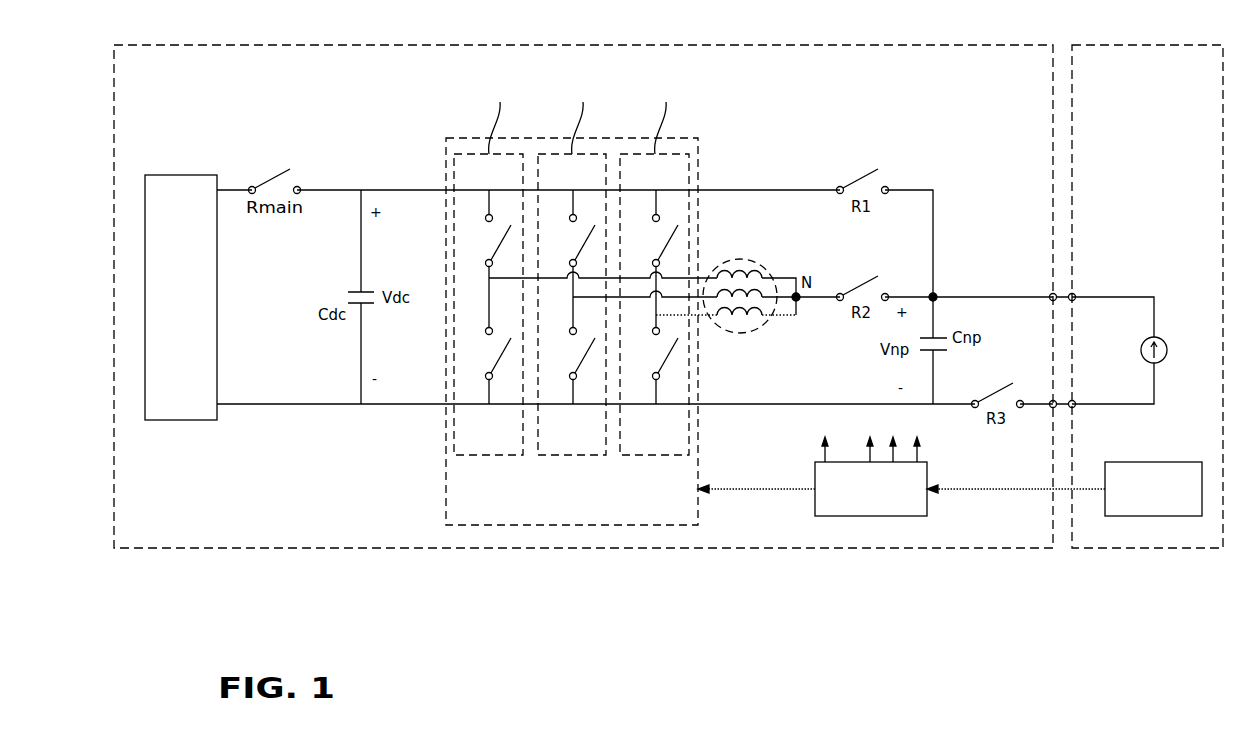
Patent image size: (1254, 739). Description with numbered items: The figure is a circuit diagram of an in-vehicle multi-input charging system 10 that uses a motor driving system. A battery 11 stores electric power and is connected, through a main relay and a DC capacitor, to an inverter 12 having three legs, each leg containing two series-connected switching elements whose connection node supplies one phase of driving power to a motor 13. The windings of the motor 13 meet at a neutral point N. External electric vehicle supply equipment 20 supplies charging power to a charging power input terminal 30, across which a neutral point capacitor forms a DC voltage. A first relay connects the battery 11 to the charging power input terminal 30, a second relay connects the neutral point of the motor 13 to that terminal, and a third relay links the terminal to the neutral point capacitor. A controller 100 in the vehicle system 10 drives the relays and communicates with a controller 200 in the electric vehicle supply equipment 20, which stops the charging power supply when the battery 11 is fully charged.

The charging system 10 is at (583, 296).
The battery 11 is at (181, 420).
The inverter 12 is at (483, 526).
The motor 13 is at (740, 333).
The electric vehicle supply equipment 20 is at (1117, 296).
The charging power input terminal 30 is at (1056, 292).
The controller 100 is at (870, 516).
The controller 200 is at (1153, 516).